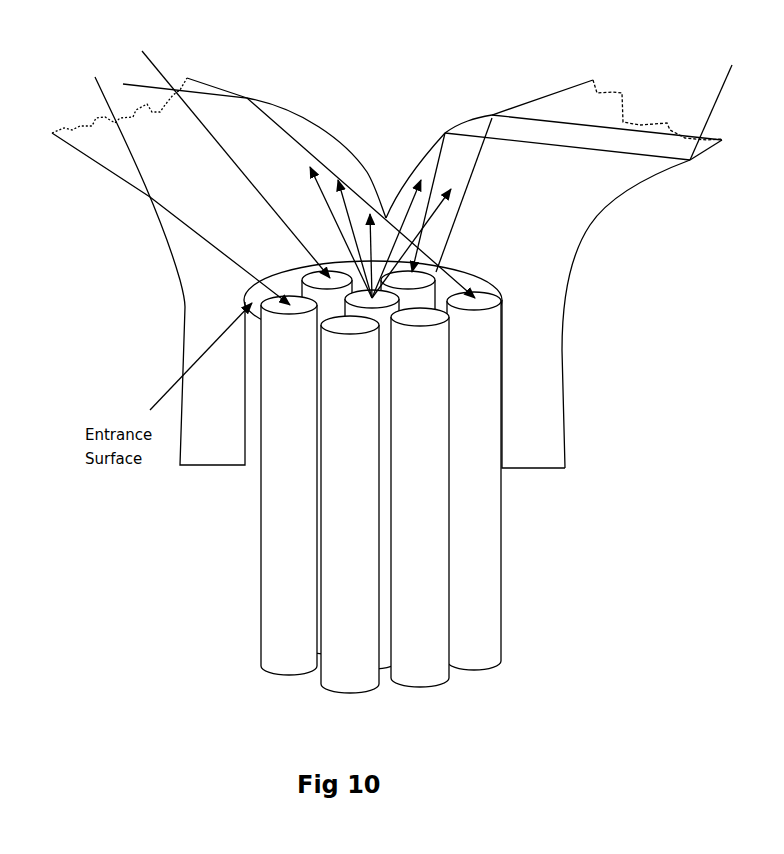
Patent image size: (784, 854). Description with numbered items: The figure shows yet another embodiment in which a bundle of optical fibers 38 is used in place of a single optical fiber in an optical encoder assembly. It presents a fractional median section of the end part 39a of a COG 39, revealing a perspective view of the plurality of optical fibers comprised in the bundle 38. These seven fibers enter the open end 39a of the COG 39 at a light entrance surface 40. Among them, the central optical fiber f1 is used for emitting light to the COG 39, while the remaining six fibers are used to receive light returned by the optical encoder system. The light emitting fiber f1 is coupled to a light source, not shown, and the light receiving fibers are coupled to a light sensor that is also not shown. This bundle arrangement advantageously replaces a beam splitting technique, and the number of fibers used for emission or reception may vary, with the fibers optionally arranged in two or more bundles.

The bundle of optical fibers 38 is at (478, 489).
The COG 39 is at (387, 341).
The end part of COG 39a is at (507, 477).
The light entrance surface 40 is at (503, 294).
The optical fiber f1 is at (385, 304).